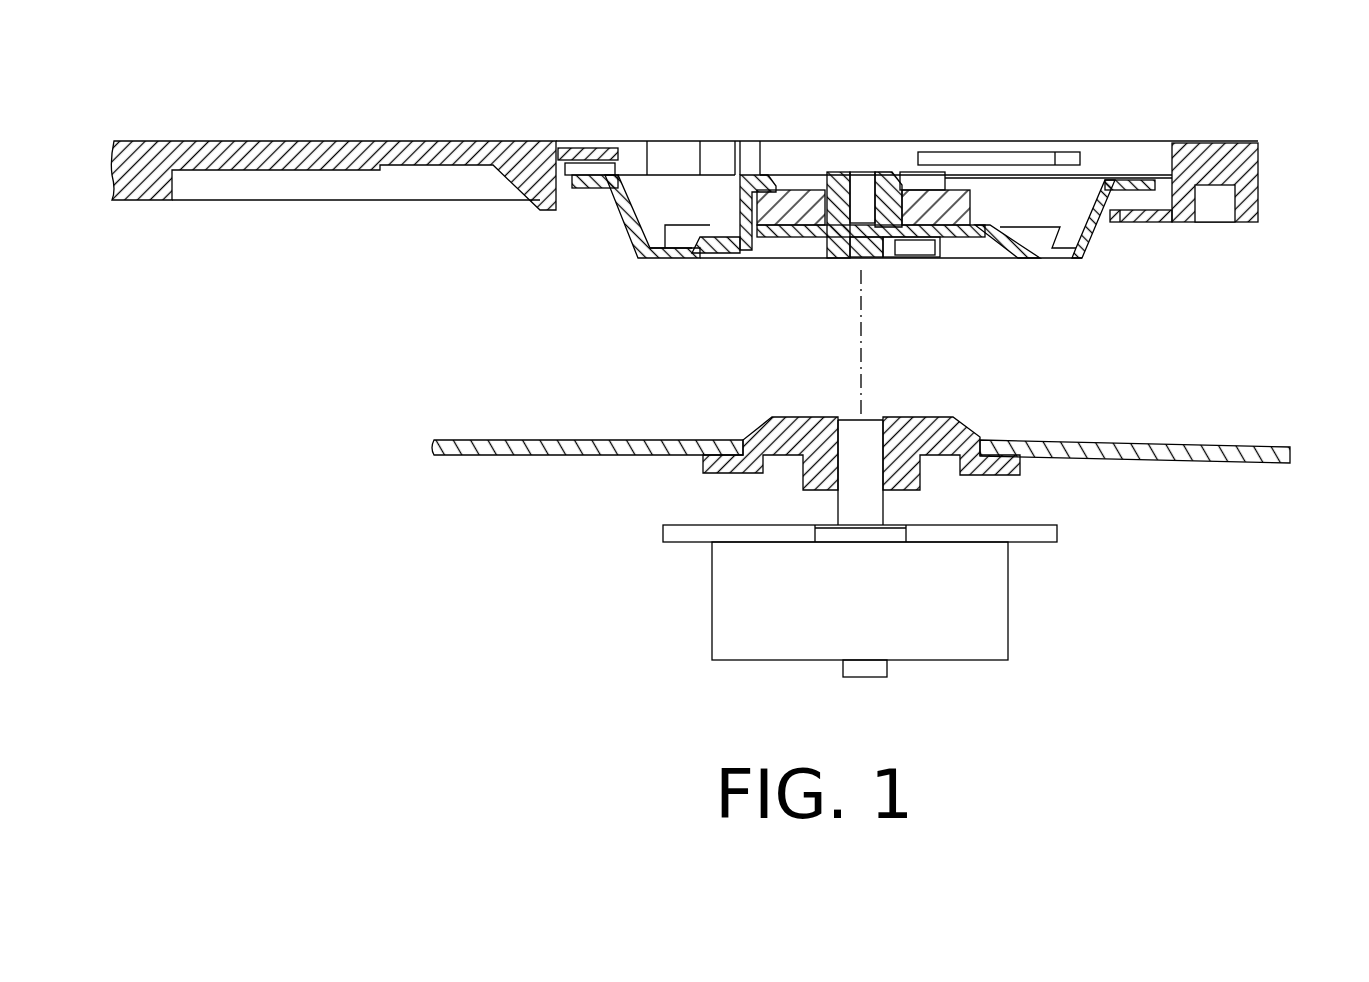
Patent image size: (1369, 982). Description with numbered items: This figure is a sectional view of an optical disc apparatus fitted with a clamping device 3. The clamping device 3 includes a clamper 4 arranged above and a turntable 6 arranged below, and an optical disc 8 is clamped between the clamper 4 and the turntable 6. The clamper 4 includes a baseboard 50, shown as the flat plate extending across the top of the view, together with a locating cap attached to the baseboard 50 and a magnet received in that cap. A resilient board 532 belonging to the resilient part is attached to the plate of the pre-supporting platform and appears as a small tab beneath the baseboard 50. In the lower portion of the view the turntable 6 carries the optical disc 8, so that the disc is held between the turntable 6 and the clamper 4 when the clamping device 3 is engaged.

The clamping device 3 is at (232, 268).
The clamper 4 is at (352, 221).
The baseboard 50 is at (300, 141).
The resilient board 532 is at (595, 148).
The turntable 6 is at (702, 467).
The optical disc 8 is at (1290, 455).